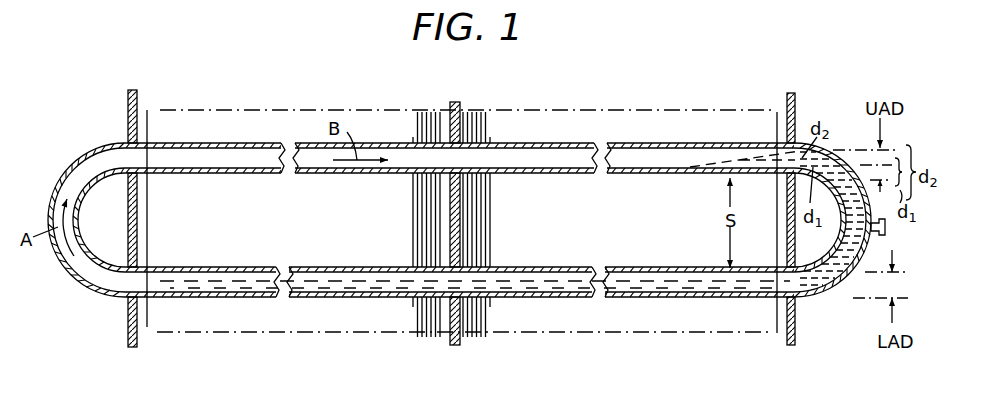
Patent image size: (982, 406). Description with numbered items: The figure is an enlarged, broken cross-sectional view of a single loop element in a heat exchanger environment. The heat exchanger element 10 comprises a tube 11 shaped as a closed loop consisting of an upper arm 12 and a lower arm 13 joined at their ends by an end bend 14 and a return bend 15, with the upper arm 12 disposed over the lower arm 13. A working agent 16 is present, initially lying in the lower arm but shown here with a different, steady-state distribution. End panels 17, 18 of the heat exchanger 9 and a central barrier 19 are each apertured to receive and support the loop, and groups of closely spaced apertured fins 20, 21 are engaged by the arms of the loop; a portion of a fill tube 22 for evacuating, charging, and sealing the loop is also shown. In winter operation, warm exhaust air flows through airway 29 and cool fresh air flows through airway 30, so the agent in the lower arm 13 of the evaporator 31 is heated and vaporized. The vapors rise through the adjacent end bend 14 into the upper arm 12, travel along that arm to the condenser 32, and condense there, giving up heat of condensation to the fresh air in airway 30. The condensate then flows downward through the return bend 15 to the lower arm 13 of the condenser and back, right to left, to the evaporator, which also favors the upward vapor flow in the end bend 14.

The heat exchanger 9 is at (418, 337).
The heat exchanger element 10 is at (200, 300).
The tube 11 is at (240, 293).
The upper arm 12 is at (231, 138).
The lower arm 13 is at (352, 297).
The end bend 14 is at (65, 270).
The return bend 15 is at (840, 233).
The working agent 16 is at (568, 287).
The end panel 17 is at (138, 95).
The end panel 18 is at (793, 103).
The central barrier 19 is at (457, 102).
The fins 20 is at (417, 113).
The fins 21 is at (483, 113).
The fill tube 22 is at (886, 234).
The airway 29 is at (233, 230).
The airway 30 is at (550, 242).
The evaporator 31 is at (271, 138).
The condenser 32 is at (658, 144).